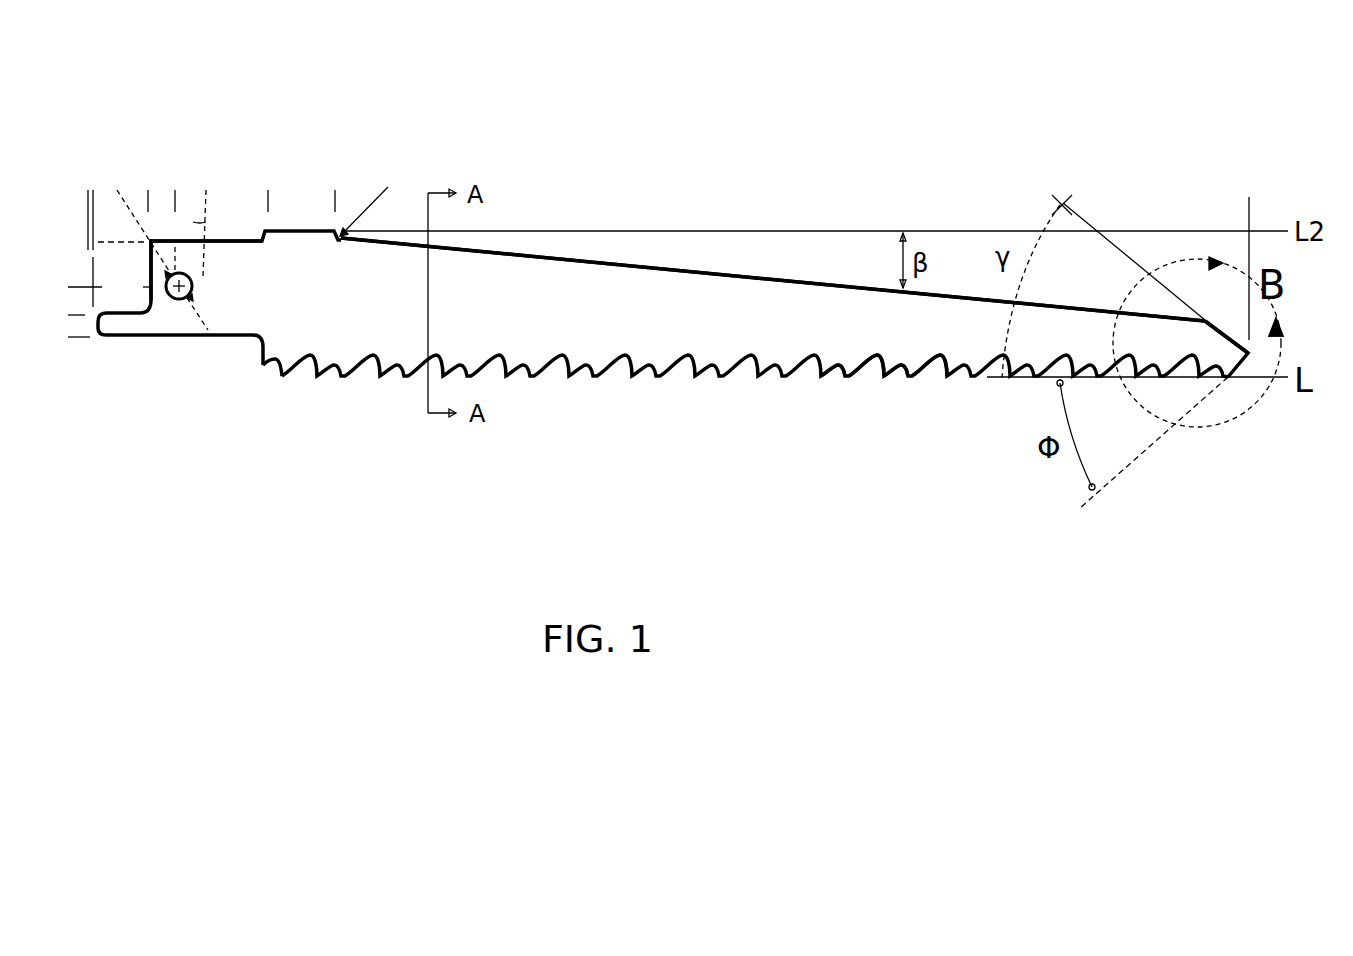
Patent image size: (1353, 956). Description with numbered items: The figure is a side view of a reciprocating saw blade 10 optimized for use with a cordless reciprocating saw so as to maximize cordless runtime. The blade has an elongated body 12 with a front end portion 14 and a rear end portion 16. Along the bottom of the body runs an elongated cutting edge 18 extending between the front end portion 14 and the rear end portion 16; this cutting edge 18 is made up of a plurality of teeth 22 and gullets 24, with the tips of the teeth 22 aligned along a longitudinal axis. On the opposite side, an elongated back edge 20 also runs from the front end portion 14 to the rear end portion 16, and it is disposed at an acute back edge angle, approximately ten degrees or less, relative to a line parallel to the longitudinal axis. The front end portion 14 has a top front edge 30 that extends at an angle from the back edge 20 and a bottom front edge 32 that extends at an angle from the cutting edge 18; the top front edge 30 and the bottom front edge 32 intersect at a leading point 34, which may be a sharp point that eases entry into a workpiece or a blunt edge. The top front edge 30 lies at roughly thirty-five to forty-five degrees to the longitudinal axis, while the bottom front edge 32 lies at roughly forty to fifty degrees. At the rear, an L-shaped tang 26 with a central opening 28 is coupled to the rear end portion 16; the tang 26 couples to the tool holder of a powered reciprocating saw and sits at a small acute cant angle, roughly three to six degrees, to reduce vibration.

The reciprocating saw blade 10 is at (706, 280).
The elongated body 12 is at (672, 302).
The front end portion 14 is at (1153, 332).
The rear end portion 16 is at (294, 262).
The cutting edge 18 is at (678, 362).
The back edge 20 is at (798, 277).
The teeth 22 is at (885, 367).
The gullets 24 is at (870, 362).
The L-shaped tang 26 is at (174, 264).
The central opening 28 is at (173, 298).
The top front edge 30 is at (1227, 323).
The bottom front edge 32 is at (1252, 368).
The leading point 34 is at (1284, 338).